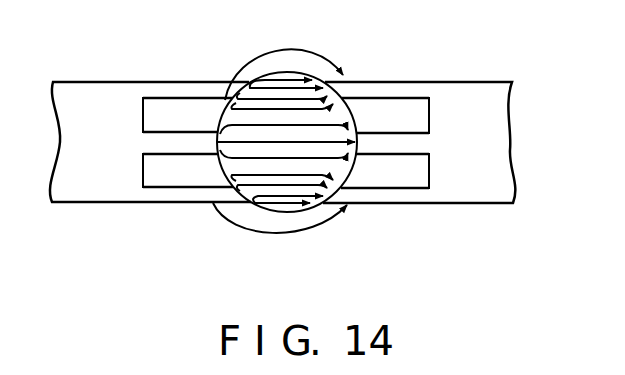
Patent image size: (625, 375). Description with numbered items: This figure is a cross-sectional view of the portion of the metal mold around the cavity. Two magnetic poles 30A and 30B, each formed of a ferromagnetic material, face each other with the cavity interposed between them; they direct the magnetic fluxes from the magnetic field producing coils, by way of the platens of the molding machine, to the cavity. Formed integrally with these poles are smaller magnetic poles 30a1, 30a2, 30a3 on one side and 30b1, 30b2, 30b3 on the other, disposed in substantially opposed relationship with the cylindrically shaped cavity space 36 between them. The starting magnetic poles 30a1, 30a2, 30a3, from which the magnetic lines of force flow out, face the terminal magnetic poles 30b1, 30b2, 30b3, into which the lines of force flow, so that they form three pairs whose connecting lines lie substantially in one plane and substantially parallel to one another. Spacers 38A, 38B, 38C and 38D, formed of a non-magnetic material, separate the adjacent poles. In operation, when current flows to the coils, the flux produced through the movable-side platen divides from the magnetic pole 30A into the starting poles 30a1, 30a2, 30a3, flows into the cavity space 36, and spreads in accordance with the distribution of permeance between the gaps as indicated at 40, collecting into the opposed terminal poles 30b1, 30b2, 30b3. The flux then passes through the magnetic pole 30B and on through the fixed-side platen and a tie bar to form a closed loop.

The magnetic pole 30A is at (98, 82).
The magnetic pole 30B is at (483, 87).
The starting magnetic pole 30a1 is at (212, 97).
The starting magnetic pole 30a2 is at (192, 145).
The starting magnetic pole 30a3 is at (213, 195).
The terminal magnetic pole 30b1 is at (367, 88).
The terminal magnetic pole 30b2 is at (404, 147).
The terminal magnetic pole 30b3 is at (393, 198).
The spacer 38A is at (167, 117).
The spacer 38B is at (155, 178).
The spacer 38C is at (413, 110).
The spacer 38D is at (425, 170).
The magnetic flux distribution 40 is at (289, 92).
The cavity space 36 is at (327, 168).